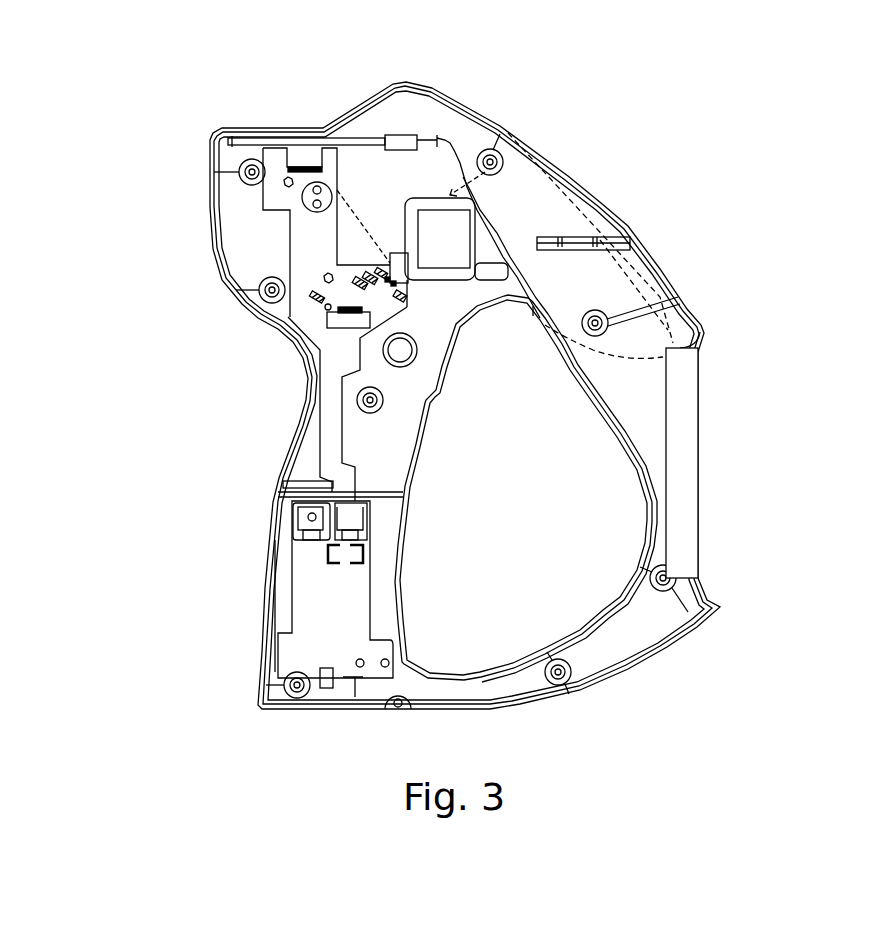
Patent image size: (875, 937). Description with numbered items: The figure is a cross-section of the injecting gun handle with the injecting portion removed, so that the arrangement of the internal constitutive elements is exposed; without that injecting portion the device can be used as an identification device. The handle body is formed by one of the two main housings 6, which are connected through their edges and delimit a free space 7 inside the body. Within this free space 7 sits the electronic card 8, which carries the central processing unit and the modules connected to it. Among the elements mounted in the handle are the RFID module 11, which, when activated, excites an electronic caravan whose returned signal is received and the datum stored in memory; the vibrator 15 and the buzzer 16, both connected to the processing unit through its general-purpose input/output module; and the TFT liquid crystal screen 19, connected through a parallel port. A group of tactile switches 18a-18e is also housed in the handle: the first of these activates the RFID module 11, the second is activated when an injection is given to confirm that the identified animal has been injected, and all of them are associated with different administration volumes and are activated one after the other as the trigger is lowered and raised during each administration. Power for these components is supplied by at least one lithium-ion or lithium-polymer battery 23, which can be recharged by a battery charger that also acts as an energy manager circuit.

The main housing 6 is at (477, 107).
The free space 7 is at (527, 200).
The electronic card 8 is at (267, 143).
The RFID module 11 is at (683, 495).
The vibrator 15 is at (322, 603).
The buzzer 16 is at (313, 202).
The tactile switches 18a-18e is at (373, 273).
The TFT liquid crystal screen 19 is at (363, 100).
The battery 23 is at (270, 589).